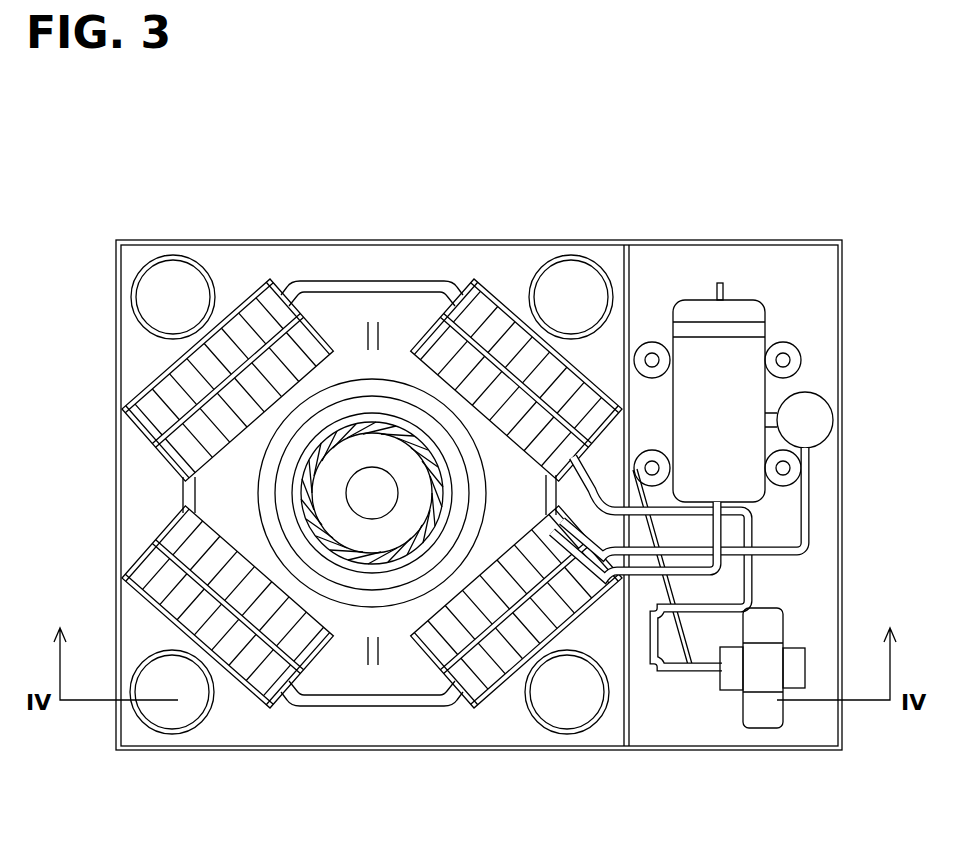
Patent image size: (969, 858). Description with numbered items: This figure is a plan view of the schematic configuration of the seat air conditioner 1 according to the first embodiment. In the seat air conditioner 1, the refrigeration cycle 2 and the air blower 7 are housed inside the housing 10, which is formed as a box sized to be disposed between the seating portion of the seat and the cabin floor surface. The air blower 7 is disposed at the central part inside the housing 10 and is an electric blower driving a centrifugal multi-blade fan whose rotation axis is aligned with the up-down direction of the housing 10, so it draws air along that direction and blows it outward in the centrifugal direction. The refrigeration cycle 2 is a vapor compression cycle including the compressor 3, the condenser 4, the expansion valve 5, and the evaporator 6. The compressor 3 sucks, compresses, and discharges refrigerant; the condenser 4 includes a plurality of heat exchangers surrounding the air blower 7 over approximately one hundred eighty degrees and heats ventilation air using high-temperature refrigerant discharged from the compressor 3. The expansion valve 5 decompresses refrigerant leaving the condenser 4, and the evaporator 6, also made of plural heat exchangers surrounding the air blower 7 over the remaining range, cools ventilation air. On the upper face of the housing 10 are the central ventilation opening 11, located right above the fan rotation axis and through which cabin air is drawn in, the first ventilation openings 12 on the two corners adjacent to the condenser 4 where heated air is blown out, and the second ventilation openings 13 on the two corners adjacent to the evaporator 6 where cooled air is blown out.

The seat air conditioner 1 is at (148, 182).
The refrigeration cycle 2 is at (806, 314).
The compressor 3 is at (707, 310).
The condenser 4 is at (192, 433).
The expansion valve 5 is at (733, 677).
The evaporator 6 is at (160, 588).
The air blower 7 is at (365, 445).
The housing 10 is at (790, 240).
The central ventilation opening 11 is at (373, 607).
The first ventilation openings 12 is at (208, 262).
The second ventilation openings 13 is at (187, 732).